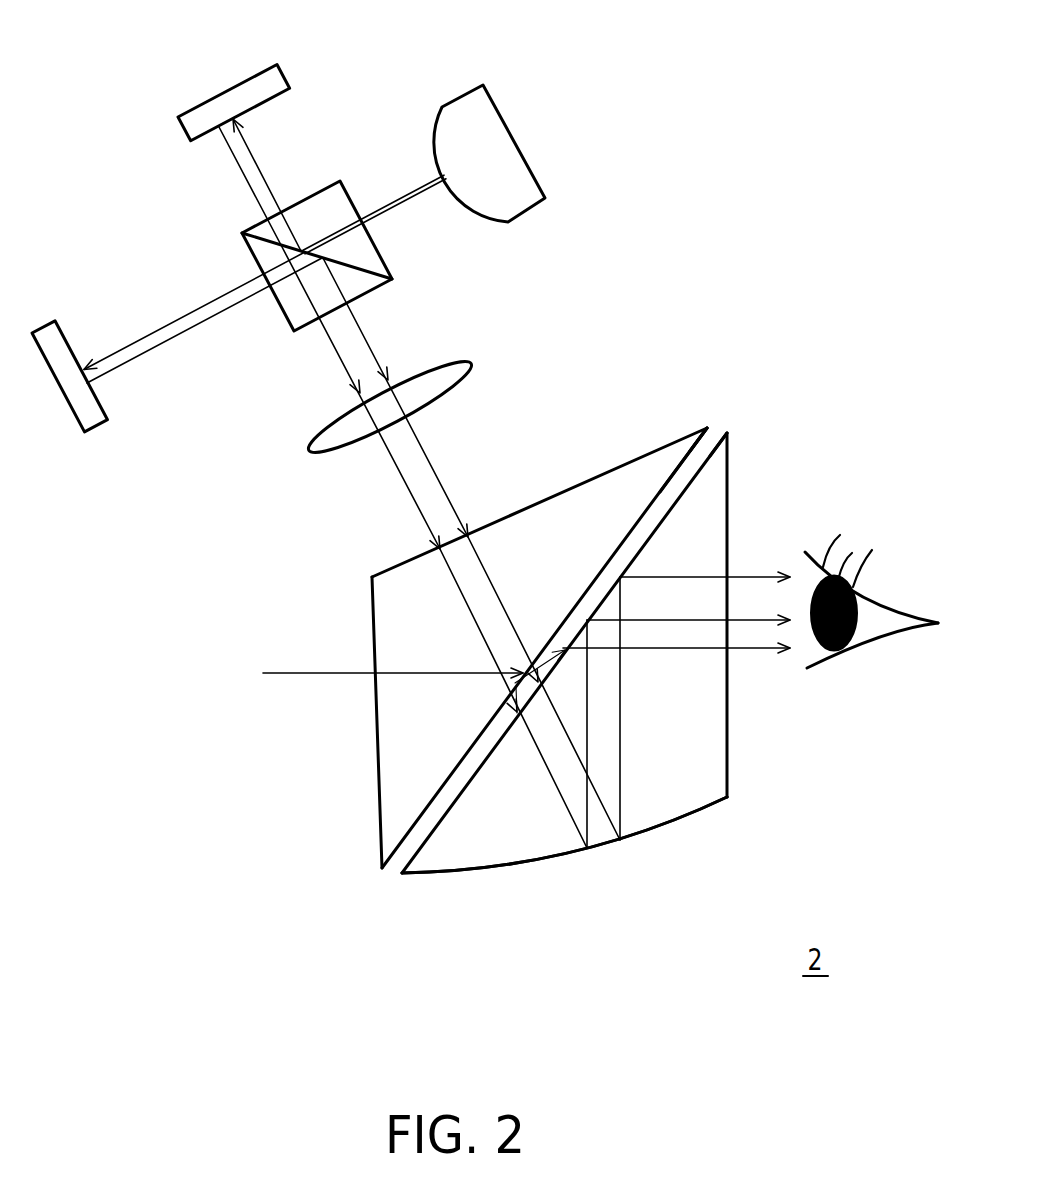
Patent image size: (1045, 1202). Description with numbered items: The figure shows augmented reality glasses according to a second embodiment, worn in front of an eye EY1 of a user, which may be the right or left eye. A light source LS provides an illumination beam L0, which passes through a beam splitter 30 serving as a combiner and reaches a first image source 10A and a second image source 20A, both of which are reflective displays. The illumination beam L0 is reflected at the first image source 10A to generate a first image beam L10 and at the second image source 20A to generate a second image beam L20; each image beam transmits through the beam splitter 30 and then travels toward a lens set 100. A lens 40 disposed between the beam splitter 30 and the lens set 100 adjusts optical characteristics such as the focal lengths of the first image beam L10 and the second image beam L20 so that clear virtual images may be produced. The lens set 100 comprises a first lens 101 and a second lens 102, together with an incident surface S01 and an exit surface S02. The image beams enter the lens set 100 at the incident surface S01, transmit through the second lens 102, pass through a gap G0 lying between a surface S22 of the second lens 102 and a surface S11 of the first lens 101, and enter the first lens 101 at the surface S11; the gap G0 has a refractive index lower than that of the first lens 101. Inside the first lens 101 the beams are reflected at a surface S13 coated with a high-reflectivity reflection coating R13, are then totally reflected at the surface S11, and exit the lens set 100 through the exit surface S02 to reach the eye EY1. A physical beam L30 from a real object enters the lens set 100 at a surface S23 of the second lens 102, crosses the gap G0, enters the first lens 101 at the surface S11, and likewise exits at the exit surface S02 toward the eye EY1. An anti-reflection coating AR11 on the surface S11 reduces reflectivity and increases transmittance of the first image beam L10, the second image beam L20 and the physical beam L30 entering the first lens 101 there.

The lens set 100 is at (546, 639).
The first lens 101 is at (612, 702).
The second lens 102 is at (488, 623).
The first image source 10A is at (285, 79).
The second image source 20A is at (99, 427).
The beam splitter 30 is at (283, 320).
The lens 40 is at (312, 445).
The light source LS is at (527, 207).
The illumination beam L0 is at (398, 200).
The first image beam L10 is at (240, 176).
The second image beam L20 is at (177, 337).
The physical beam L30 is at (310, 675).
The incident surface S01 is at (398, 563).
The exit surface S02 is at (731, 780).
The surface of first lens S11 is at (702, 468).
The surface of first lens S13 is at (537, 868).
The surface of second lens S22 is at (632, 528).
The surface of second lens S23 is at (370, 627).
The reflection coating R13 is at (677, 825).
The gap G0 is at (712, 436).
The anti-reflection coating AR11 is at (675, 497).
The eye EY1 is at (882, 650).